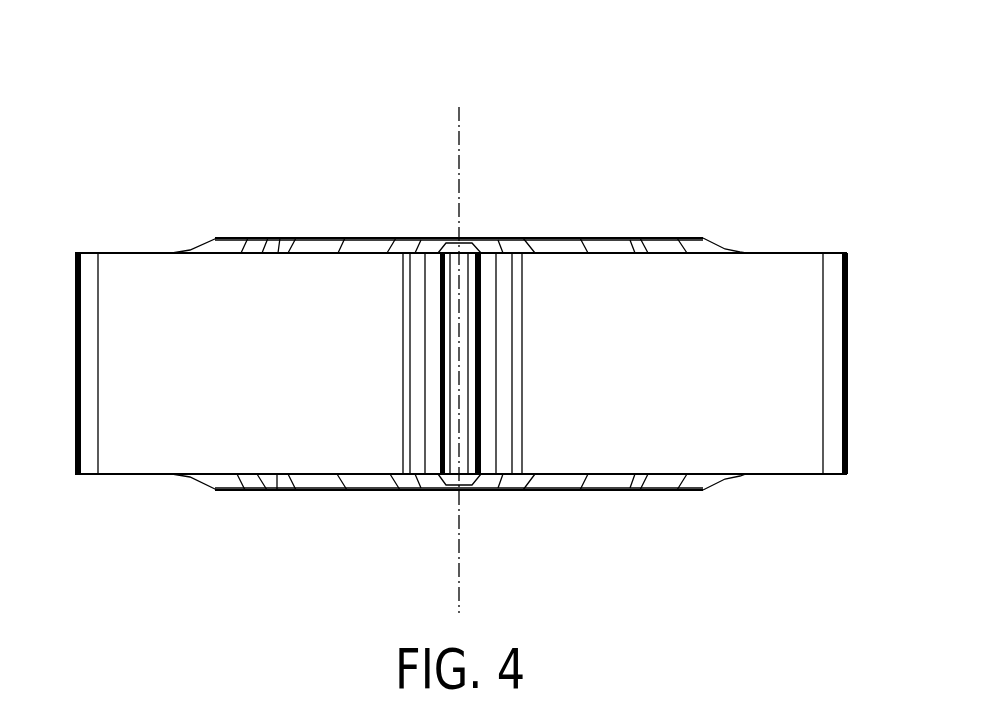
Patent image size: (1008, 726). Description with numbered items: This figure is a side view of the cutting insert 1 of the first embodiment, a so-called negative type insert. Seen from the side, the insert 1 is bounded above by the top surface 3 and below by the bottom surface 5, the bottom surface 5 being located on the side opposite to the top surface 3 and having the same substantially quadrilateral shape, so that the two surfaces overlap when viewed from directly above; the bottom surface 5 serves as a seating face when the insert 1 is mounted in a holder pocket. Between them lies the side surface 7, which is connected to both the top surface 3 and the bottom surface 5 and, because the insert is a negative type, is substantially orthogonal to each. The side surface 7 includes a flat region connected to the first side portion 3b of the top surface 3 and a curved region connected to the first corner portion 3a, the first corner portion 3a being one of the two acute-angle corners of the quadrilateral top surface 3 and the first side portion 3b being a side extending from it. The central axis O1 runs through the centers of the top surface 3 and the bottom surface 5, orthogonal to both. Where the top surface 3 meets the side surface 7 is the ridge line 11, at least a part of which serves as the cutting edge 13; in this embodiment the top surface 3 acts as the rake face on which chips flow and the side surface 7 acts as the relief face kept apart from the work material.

The insert 1 is at (210, 134).
The top surface 3 is at (785, 252).
The first corner portion 3a is at (438, 243).
The first side portion 3b is at (150, 253).
The bottom surface 5 is at (568, 493).
The side surface 7 is at (160, 400).
The ridge line 11 is at (504, 303).
The cutting edge 13 is at (503, 248).
The central axis O1 is at (462, 338).